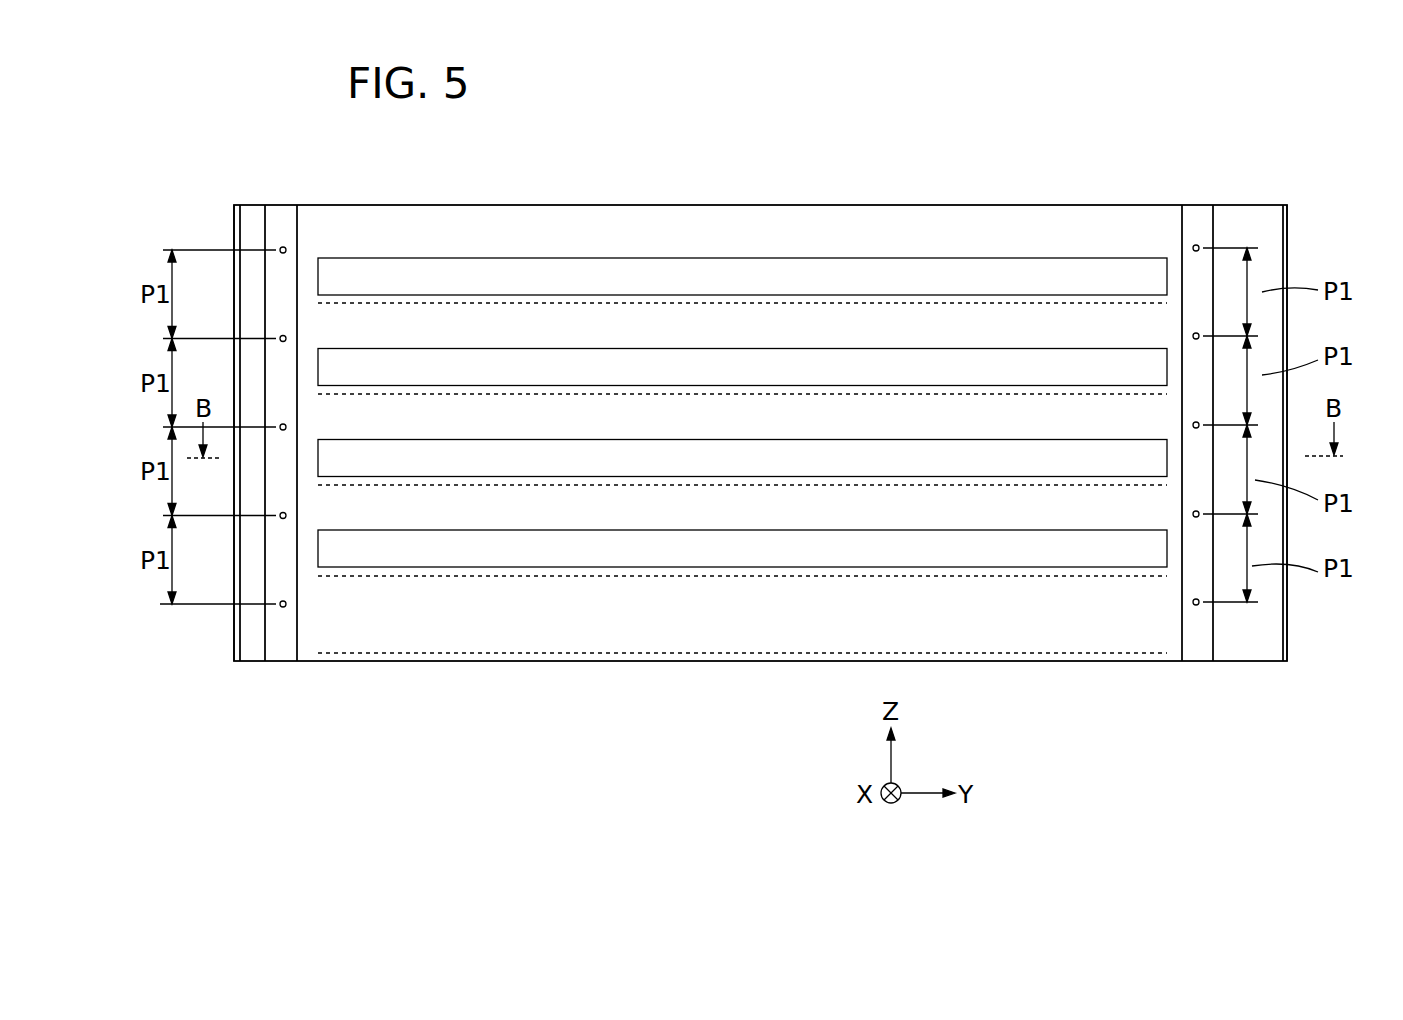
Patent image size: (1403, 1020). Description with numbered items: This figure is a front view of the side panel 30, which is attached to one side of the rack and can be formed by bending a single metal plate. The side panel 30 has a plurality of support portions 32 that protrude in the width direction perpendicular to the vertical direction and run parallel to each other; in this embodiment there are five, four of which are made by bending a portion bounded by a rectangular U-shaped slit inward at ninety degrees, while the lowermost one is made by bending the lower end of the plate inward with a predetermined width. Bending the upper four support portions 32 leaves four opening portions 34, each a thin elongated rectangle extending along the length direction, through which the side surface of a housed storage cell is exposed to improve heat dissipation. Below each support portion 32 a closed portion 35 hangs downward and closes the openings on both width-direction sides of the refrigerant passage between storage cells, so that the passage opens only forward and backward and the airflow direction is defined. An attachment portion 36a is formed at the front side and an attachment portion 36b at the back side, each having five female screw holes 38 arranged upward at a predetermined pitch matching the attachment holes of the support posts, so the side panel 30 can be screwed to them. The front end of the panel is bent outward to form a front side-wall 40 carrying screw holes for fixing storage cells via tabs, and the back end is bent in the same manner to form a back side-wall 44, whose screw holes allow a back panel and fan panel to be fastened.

The side panel 30 is at (1078, 184).
The support portion 32 is at (487, 295).
The opening portion 34 is at (866, 284).
The closed portion 35 is at (830, 333).
The attachment portion 36a is at (280, 206).
The attachment portion 36b is at (1197, 206).
The female screw hole 38 is at (280, 337).
The front side-wall 40 is at (233, 212).
The back side-wall 44 is at (1289, 216).